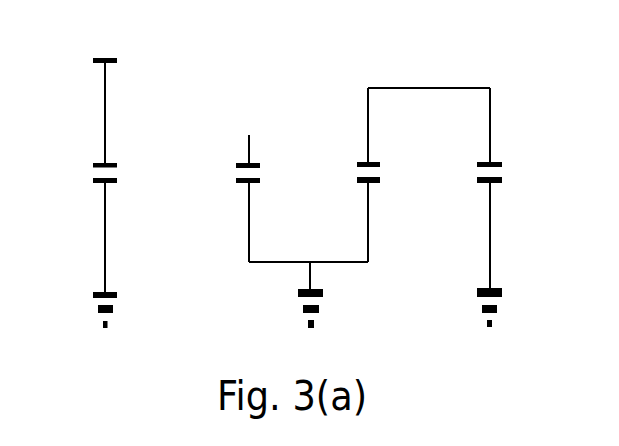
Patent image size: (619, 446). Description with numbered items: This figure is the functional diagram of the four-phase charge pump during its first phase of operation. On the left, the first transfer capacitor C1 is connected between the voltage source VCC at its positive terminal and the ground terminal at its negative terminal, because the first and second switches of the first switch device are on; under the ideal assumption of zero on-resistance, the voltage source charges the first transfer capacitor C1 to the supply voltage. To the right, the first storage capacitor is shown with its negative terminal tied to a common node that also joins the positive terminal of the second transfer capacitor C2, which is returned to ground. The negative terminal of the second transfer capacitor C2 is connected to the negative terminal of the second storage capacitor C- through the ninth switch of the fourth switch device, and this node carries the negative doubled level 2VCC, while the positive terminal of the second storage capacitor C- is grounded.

The first transfer capacitor C1 is at (82, 193).
The second transfer capacitor C2 is at (397, 175).
The second storage capacitor C- is at (515, 207).
The voltage source VCC is at (103, 24).
The voltage of 2Vcc 2VCC is at (423, 59).